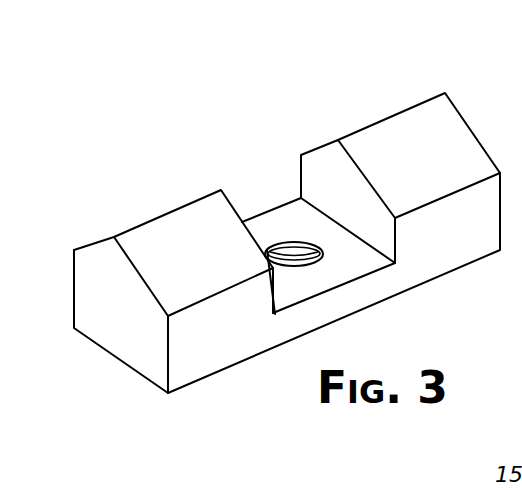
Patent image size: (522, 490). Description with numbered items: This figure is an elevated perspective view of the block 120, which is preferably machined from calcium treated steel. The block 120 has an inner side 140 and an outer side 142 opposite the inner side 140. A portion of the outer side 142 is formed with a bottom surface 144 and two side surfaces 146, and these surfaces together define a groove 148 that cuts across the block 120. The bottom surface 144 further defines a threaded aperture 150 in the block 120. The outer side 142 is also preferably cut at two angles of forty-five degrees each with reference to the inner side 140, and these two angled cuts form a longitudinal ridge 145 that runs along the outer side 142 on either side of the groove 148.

The block 120 is at (275, 246).
The inner side 140 is at (128, 366).
The outer side 142 is at (213, 268).
The bottom surface 144 is at (370, 276).
The longitudinal ridge 145 is at (382, 120).
The side surfaces 146 is at (233, 207).
The groove 148 is at (287, 162).
The threaded aperture 150 is at (297, 245).